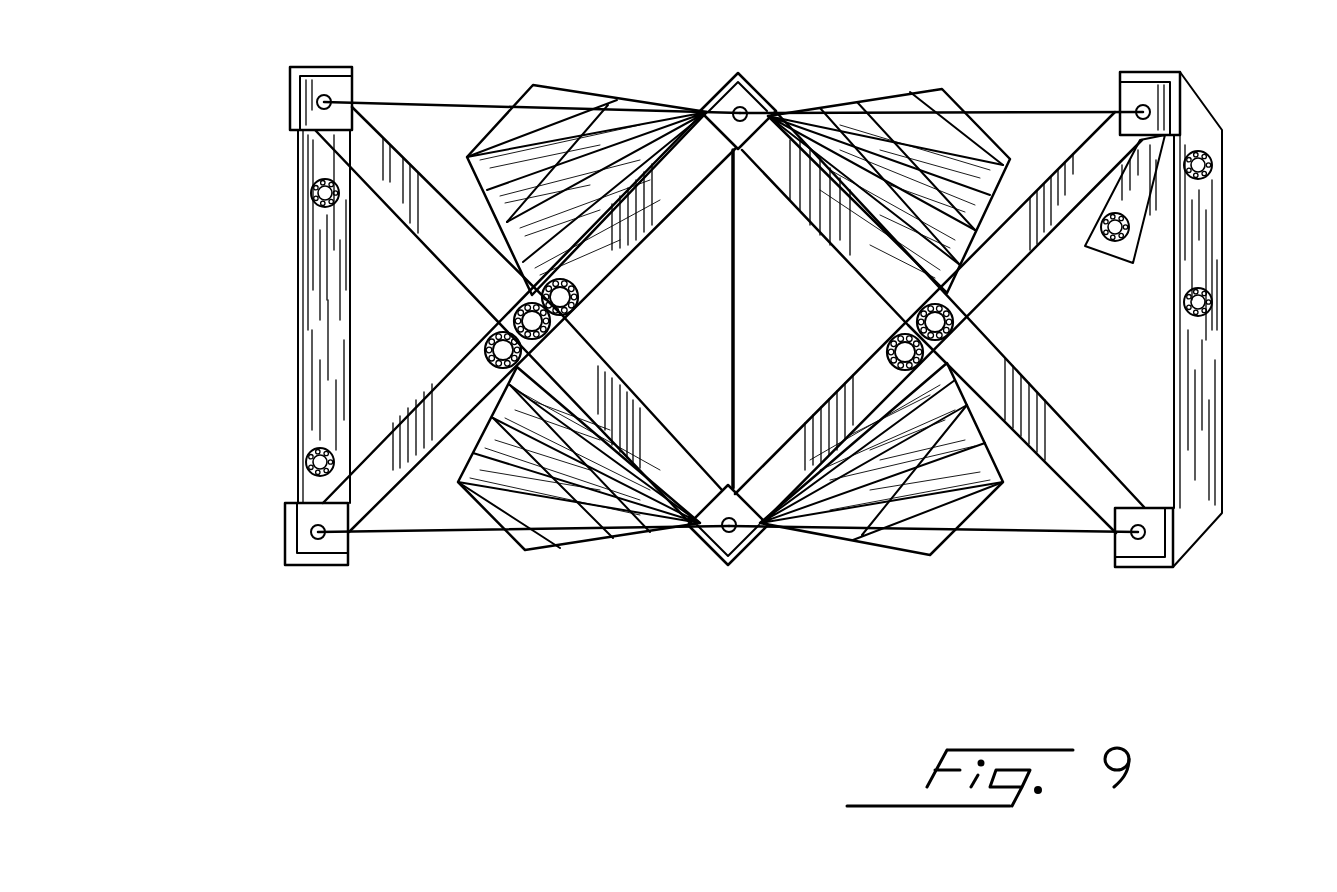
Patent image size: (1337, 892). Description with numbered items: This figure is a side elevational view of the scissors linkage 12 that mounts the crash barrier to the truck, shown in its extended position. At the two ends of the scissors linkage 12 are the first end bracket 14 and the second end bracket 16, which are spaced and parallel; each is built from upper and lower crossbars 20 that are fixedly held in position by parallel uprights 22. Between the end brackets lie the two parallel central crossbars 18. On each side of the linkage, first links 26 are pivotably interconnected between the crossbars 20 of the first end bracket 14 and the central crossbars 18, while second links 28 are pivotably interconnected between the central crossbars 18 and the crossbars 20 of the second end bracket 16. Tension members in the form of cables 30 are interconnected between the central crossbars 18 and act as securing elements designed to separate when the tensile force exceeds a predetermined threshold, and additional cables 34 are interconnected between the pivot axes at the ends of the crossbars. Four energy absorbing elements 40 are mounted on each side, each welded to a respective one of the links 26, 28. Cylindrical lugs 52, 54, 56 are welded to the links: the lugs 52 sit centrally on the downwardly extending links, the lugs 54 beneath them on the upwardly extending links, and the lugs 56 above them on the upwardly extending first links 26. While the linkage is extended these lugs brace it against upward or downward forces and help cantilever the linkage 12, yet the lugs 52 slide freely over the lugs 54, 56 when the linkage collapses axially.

The scissors linkage 12 is at (740, 323).
The first end bracket 14 is at (255, 428).
The second end bracket 16 is at (1240, 428).
The central crossbar 18 is at (762, 105).
The crossbar 20 is at (290, 95).
The upright 22 is at (302, 338).
The first link 26 is at (652, 225).
The second link 28 is at (850, 393).
The cable 30 is at (740, 280).
The cable 34 is at (462, 102).
The energy absorbing element 40 is at (612, 88).
The lug 52 is at (505, 305).
The lug 54 is at (485, 345).
The lug 56 is at (580, 300).